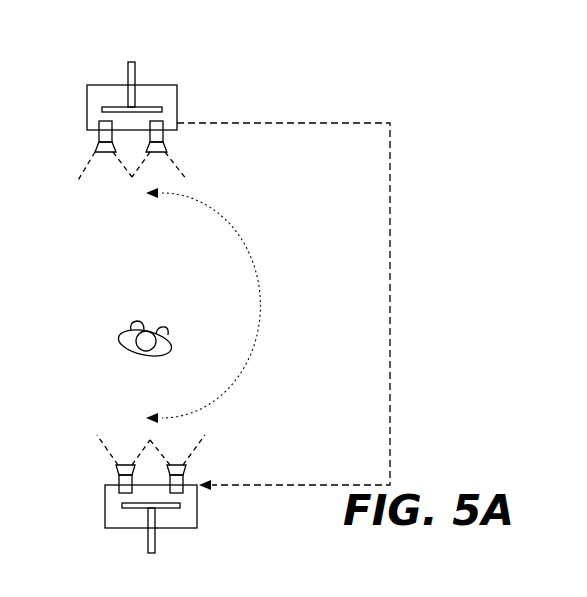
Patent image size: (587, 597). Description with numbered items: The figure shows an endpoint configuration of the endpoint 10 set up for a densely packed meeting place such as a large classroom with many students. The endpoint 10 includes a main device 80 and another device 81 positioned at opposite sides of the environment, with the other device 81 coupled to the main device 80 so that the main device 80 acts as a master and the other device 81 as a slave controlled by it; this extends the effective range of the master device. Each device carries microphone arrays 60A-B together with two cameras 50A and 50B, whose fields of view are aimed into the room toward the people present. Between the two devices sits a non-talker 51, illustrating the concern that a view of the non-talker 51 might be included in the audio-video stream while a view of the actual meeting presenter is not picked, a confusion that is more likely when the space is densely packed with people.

The endpoint 10 is at (266, 63).
The main device 80 is at (98, 84).
The other device 81 is at (237, 524).
The microphone arrays 60A-B is at (138, 68).
The first camera 50A is at (97, 135).
The second camera 50B is at (165, 142).
The non-talker 51 is at (97, 343).